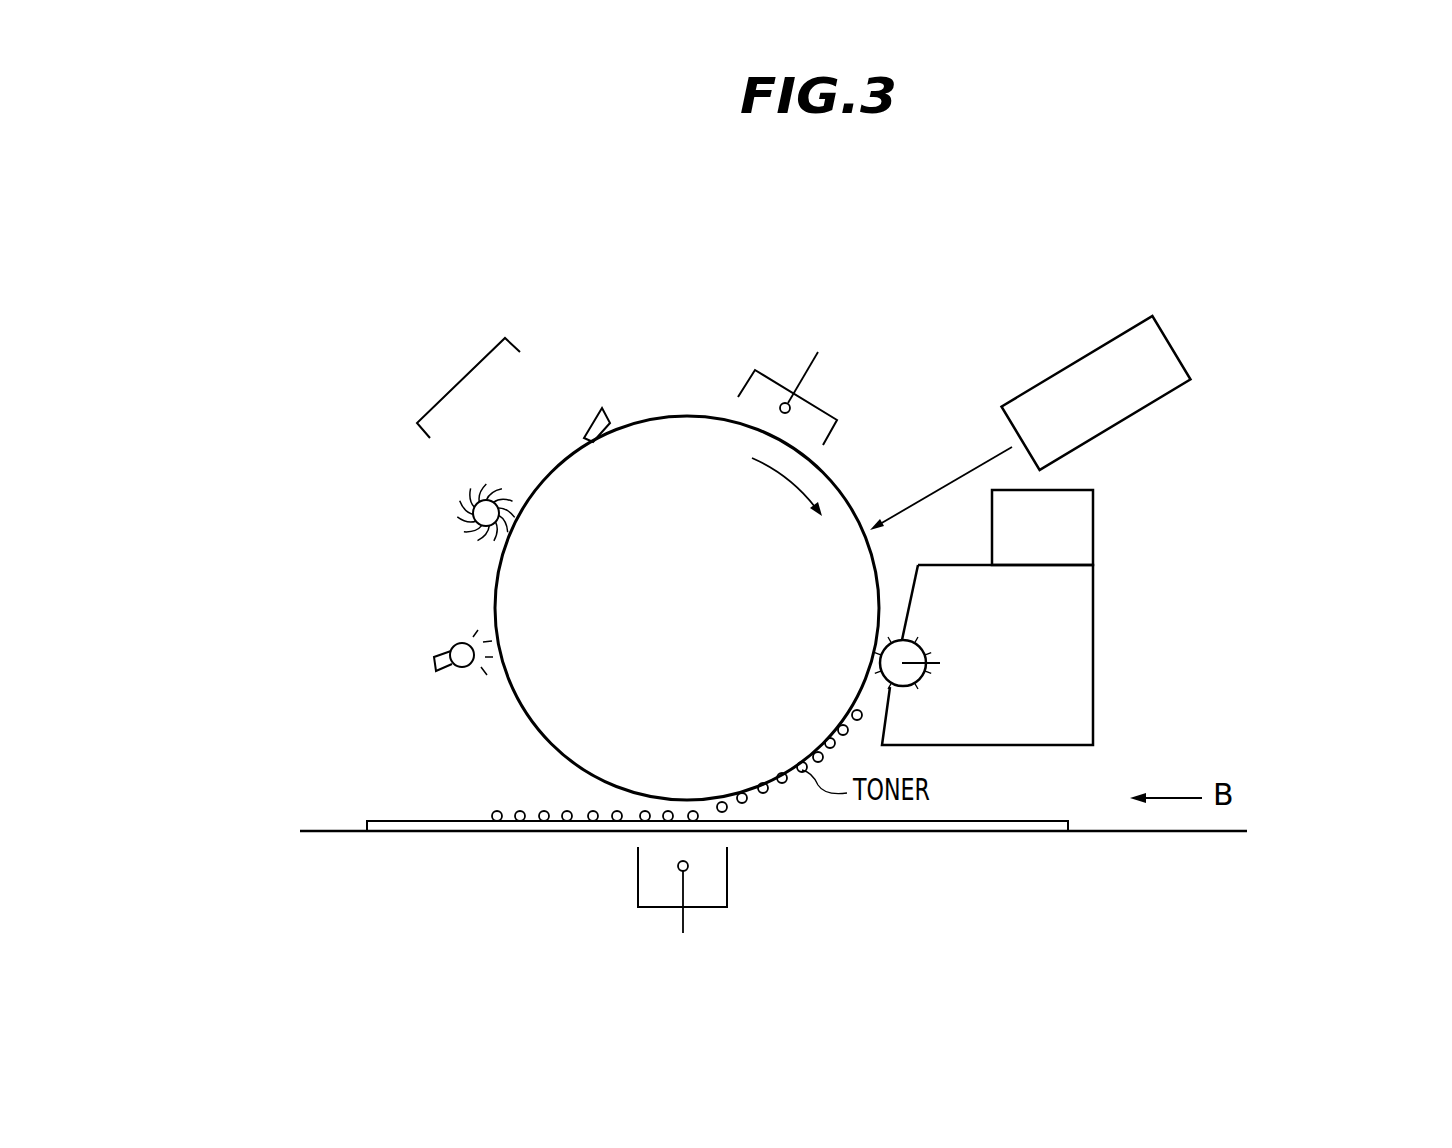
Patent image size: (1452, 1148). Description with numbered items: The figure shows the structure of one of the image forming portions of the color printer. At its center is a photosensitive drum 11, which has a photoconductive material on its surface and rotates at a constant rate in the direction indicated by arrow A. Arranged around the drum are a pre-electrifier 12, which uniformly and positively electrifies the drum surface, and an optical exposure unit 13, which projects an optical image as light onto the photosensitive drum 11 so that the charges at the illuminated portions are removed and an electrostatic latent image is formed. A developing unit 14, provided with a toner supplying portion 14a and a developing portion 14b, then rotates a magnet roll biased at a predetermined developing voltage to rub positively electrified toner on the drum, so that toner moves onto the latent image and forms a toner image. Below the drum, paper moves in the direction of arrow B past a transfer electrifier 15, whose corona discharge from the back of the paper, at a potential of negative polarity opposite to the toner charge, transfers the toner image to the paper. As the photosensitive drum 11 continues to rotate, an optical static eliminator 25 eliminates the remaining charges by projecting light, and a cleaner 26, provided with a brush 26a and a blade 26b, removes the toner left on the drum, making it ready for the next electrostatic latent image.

The photosensitive drum 11 is at (685, 415).
The pre-electrifier 12 is at (768, 378).
The optical exposure unit 13 is at (1100, 347).
The developing unit 14 is at (1147, 622).
The toner supplying portion 14a is at (1095, 533).
The developing portion 14b is at (1083, 688).
The transfer electrifier 15 is at (725, 867).
The optical static eliminator 25 is at (432, 663).
The cleaner 26 is at (447, 390).
The brush 26a is at (463, 503).
The blade 26b is at (587, 425).